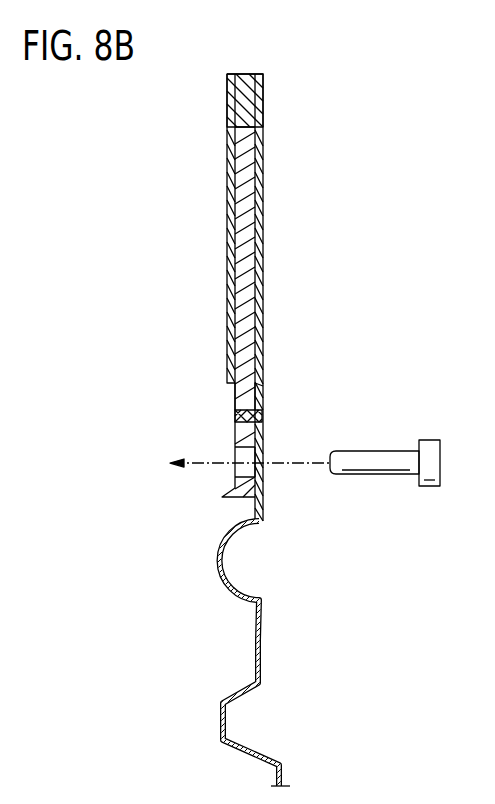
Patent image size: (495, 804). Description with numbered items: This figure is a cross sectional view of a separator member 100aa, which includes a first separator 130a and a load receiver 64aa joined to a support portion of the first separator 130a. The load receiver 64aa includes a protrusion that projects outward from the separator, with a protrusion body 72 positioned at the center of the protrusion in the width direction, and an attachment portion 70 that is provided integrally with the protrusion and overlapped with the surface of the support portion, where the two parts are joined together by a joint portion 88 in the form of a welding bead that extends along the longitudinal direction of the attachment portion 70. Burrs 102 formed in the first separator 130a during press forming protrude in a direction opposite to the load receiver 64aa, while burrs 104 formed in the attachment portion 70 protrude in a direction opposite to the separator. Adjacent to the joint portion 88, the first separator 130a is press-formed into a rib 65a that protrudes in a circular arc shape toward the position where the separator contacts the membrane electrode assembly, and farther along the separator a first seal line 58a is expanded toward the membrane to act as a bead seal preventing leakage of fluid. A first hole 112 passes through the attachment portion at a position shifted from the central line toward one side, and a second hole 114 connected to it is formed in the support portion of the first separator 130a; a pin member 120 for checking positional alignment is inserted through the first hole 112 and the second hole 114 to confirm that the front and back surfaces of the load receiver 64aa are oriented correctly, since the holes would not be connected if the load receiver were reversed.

The load receiver 64aa is at (229, 74).
The separator member 100aa is at (268, 89).
The protrusion body 72 is at (253, 117).
The attachment portion 70 is at (241, 391).
The burrs 102 is at (262, 386).
The joint portion 88 is at (258, 416).
The pin member 120 is at (438, 440).
The first hole 112 is at (237, 475).
The second hole 114 is at (264, 470).
The burrs 104 is at (230, 489).
The rib 65a is at (228, 570).
The first seal line 58a is at (227, 722).
The first separator 130a is at (285, 778).